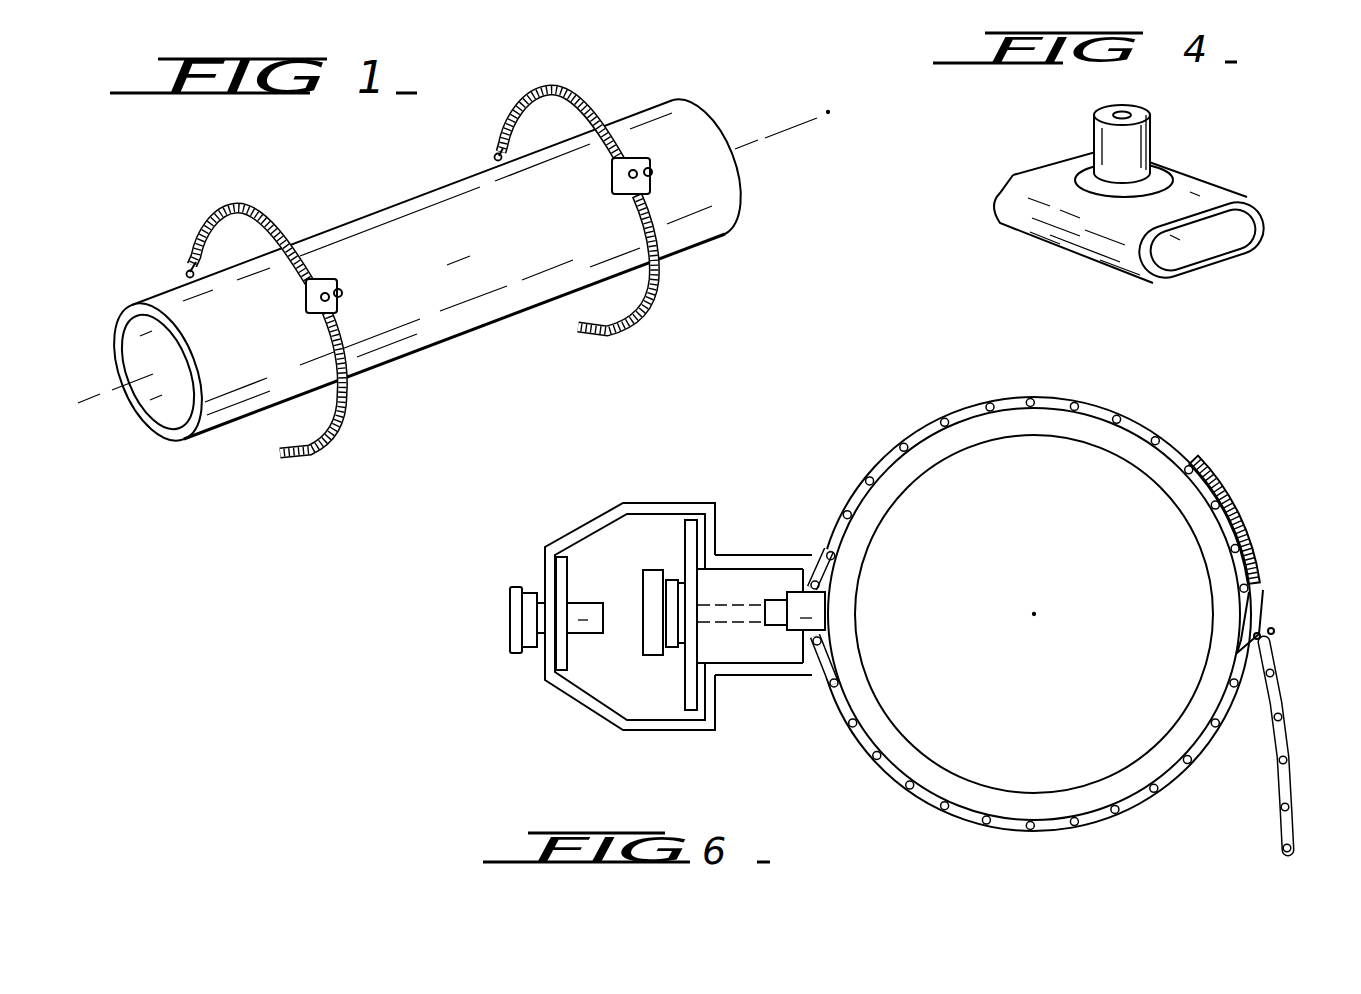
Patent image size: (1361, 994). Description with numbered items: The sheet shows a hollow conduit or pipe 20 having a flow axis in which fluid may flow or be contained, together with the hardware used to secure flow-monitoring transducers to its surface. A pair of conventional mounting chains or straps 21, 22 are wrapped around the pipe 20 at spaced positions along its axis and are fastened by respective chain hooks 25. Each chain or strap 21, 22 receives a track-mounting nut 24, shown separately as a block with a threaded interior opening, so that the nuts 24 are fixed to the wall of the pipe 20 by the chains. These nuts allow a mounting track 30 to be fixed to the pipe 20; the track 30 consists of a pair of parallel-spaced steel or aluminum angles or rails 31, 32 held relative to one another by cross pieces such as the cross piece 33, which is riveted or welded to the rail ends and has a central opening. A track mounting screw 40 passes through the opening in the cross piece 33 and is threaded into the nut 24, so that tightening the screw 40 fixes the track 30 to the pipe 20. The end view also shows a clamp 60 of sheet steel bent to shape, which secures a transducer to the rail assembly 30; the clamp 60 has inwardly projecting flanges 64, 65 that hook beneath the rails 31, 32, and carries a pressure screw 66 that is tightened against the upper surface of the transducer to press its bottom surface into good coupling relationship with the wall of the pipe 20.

In FIG. 1, the pipe 20 is at (468, 309).
In FIG. 6, the pipe 20 is at (1069, 440).
In FIG. 1, the mounting chain or strap 21 is at (345, 435).
In FIG. 1, the mounting chain or strap 22 is at (660, 301).
In FIG. 6, the mounting chain or strap 22 is at (1252, 535).
In FIG. 1, the track-mounting nut 24 is at (613, 184).
In FIG. 4, the track-mounting nut 24 is at (1218, 193).
In FIG. 6, the chain hook 25 is at (1255, 615).
In FIG. 6, the mounting track 30 is at (787, 683).
In FIG. 6, the rail 31 is at (760, 555).
In FIG. 6, the rail 32 is at (763, 675).
In FIG. 6, the cross piece 33 is at (682, 540).
In FIG. 6, the track mounting screw 40 is at (640, 603).
In FIG. 6, the clamp 60 is at (593, 703).
In FIG. 6, the inwardly projecting flange 64 is at (717, 520).
In FIG. 6, the inwardly projecting flange 65 is at (717, 703).
In FIG. 6, the pressure screw 66 is at (510, 620).